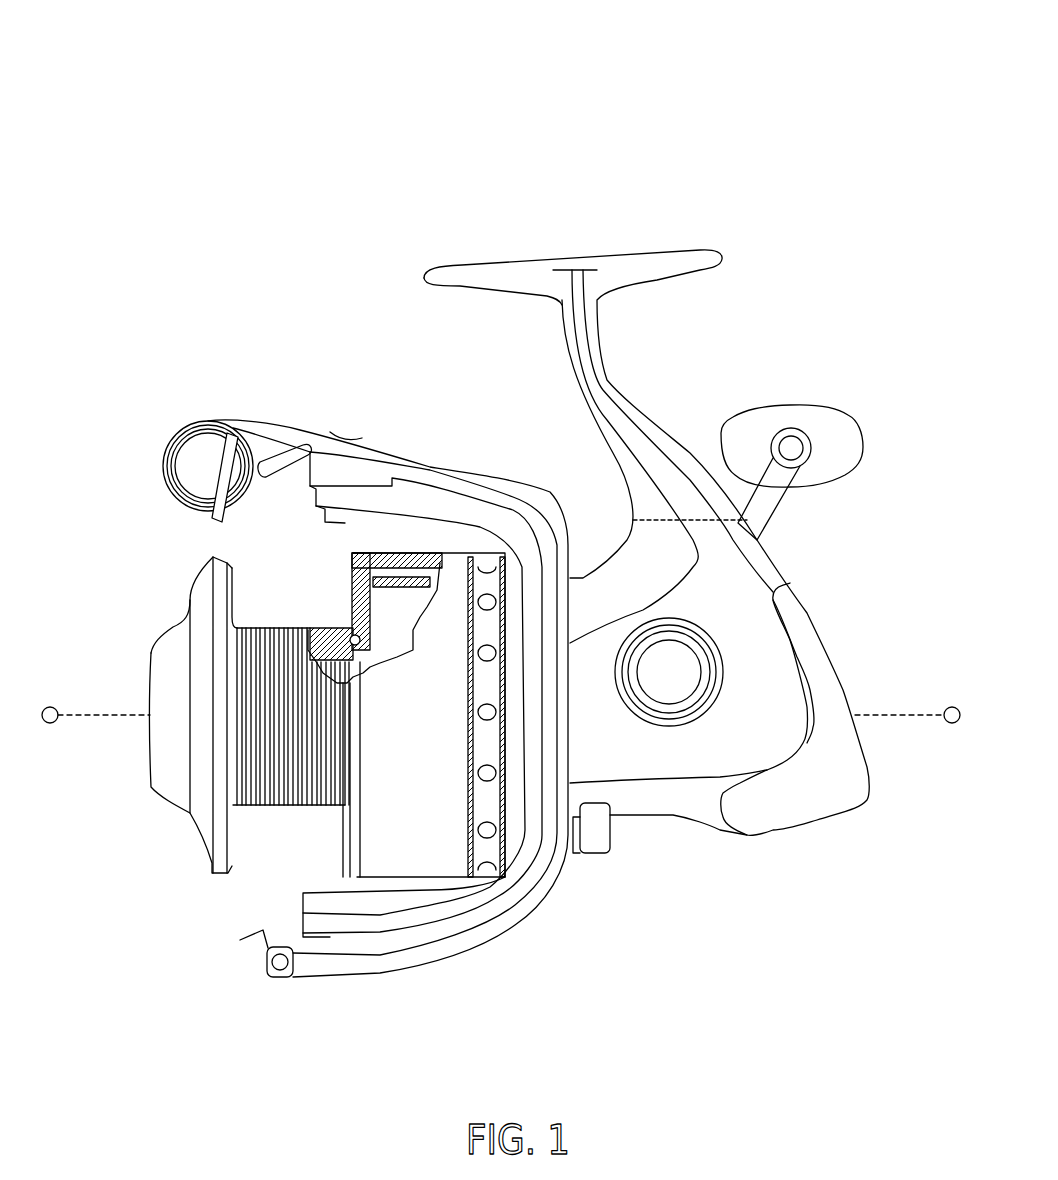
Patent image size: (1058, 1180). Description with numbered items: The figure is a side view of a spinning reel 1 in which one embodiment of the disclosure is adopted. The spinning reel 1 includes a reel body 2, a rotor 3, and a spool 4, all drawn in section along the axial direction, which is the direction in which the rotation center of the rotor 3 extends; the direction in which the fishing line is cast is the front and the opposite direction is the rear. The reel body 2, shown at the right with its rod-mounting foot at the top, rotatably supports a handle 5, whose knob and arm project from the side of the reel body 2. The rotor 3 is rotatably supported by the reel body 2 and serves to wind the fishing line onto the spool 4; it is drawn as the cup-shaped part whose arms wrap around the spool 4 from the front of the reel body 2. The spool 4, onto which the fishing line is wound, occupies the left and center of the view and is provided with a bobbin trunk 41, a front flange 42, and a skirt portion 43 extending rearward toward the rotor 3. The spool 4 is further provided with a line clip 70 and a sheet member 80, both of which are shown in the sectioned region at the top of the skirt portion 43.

The spinning reel 1 is at (688, 116).
The reel body 2 is at (707, 848).
The rotor 3 is at (270, 391).
The spool 4 is at (309, 756).
The handle 5 is at (838, 397).
The bobbin trunk 41 is at (297, 807).
The front flange 42 is at (218, 865).
The skirt portion 43 is at (417, 853).
The line clip 70 is at (380, 555).
The sheet member 80 is at (413, 554).